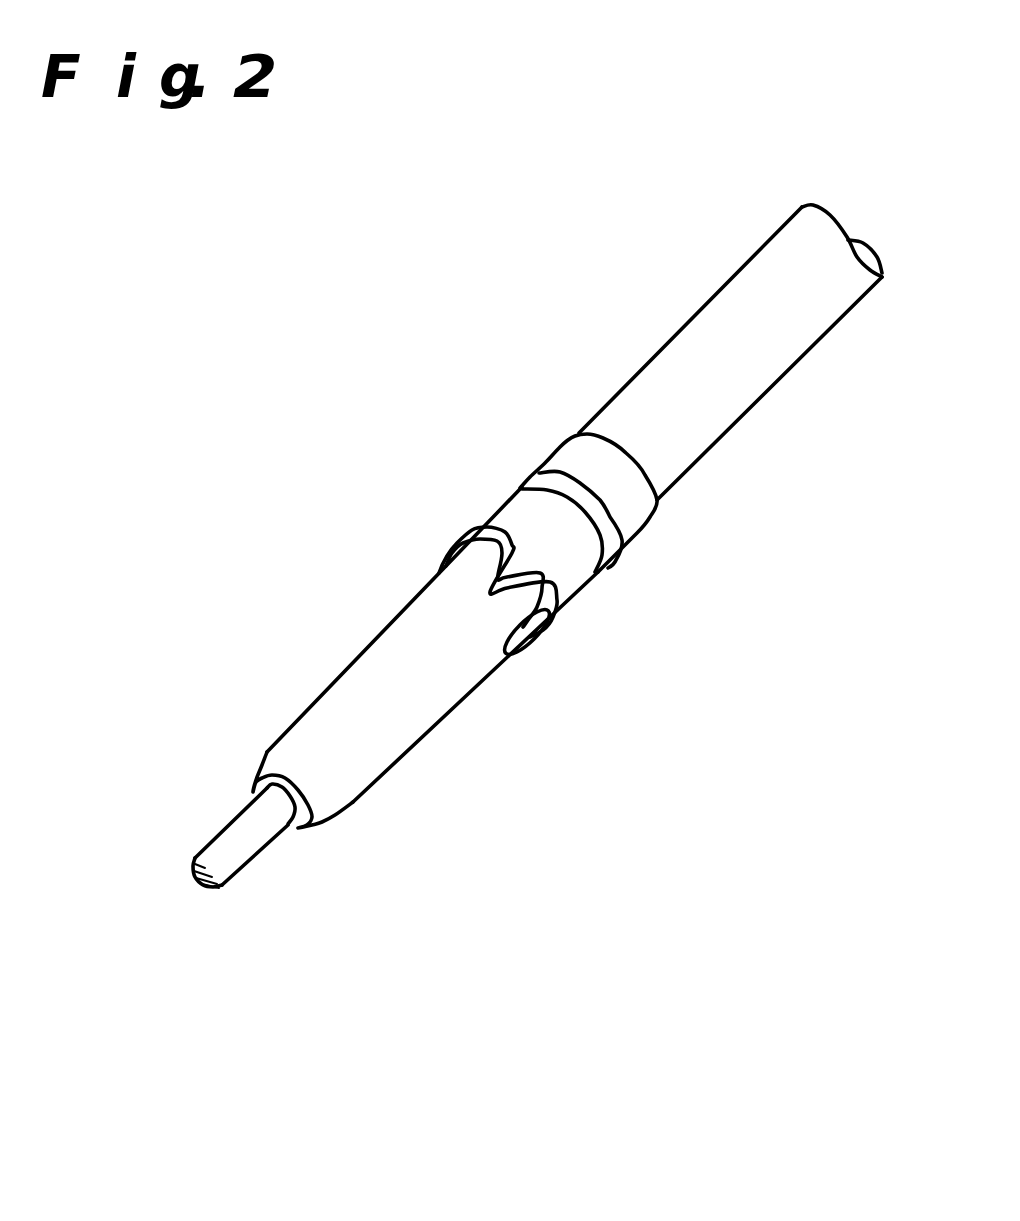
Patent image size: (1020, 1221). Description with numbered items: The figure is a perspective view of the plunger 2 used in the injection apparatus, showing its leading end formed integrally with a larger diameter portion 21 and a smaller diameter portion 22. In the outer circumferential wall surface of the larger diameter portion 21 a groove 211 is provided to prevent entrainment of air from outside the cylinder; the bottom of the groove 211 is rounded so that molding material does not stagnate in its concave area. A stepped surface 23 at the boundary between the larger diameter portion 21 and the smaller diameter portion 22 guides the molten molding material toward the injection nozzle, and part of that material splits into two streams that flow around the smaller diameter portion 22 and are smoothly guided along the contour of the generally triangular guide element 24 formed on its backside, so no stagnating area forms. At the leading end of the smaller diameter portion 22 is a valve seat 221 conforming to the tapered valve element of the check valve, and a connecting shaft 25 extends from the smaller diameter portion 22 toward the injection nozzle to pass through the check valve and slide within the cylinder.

The plunger 2 is at (563, 429).
The larger diameter portion 21 is at (560, 567).
The groove 211 is at (560, 497).
The smaller diameter portion 22 is at (427, 703).
The valve seat 221 is at (279, 765).
The stepped surface 23 is at (507, 642).
The guide element 24 is at (443, 569).
The connecting shaft 25 is at (242, 843).